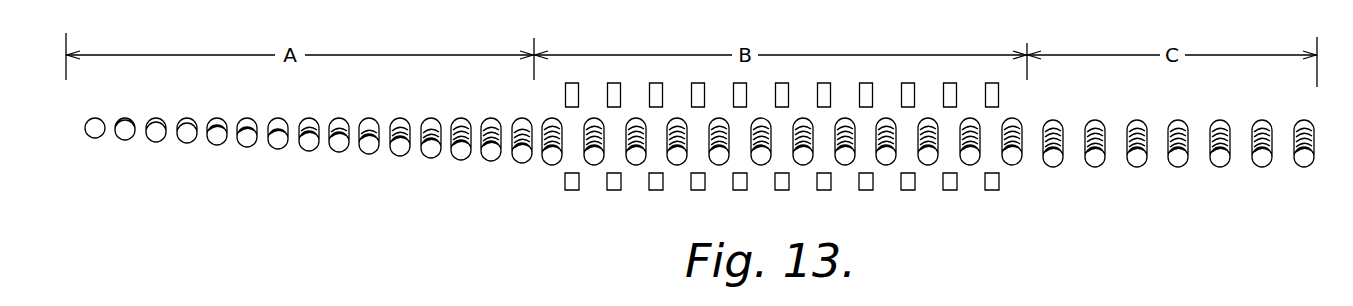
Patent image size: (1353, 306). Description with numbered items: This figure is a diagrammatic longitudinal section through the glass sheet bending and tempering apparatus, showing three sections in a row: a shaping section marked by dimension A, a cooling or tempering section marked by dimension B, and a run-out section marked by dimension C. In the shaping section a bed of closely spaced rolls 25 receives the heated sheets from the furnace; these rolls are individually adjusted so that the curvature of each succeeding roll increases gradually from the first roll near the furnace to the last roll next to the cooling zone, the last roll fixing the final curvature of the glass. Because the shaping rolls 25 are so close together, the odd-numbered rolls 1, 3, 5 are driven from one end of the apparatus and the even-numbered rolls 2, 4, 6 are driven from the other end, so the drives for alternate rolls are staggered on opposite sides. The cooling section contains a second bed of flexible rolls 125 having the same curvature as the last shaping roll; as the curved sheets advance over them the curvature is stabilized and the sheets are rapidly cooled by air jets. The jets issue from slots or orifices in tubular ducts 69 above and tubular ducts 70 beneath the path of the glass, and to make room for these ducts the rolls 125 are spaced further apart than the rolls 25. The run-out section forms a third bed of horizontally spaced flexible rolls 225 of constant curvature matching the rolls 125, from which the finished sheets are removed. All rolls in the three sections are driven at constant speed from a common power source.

The roll 1 is at (92, 138).
The roll 2 is at (120, 138).
The roll 3 is at (153, 140).
The roll 4 is at (185, 142).
The roll 5 is at (215, 145).
The roll 6 is at (245, 148).
The rolls 25 is at (347, 115).
The tubular duct 69 is at (703, 88).
The tubular duct 70 is at (612, 190).
The flexible rolls 125 is at (886, 170).
The flexible rolls 225 is at (1062, 118).